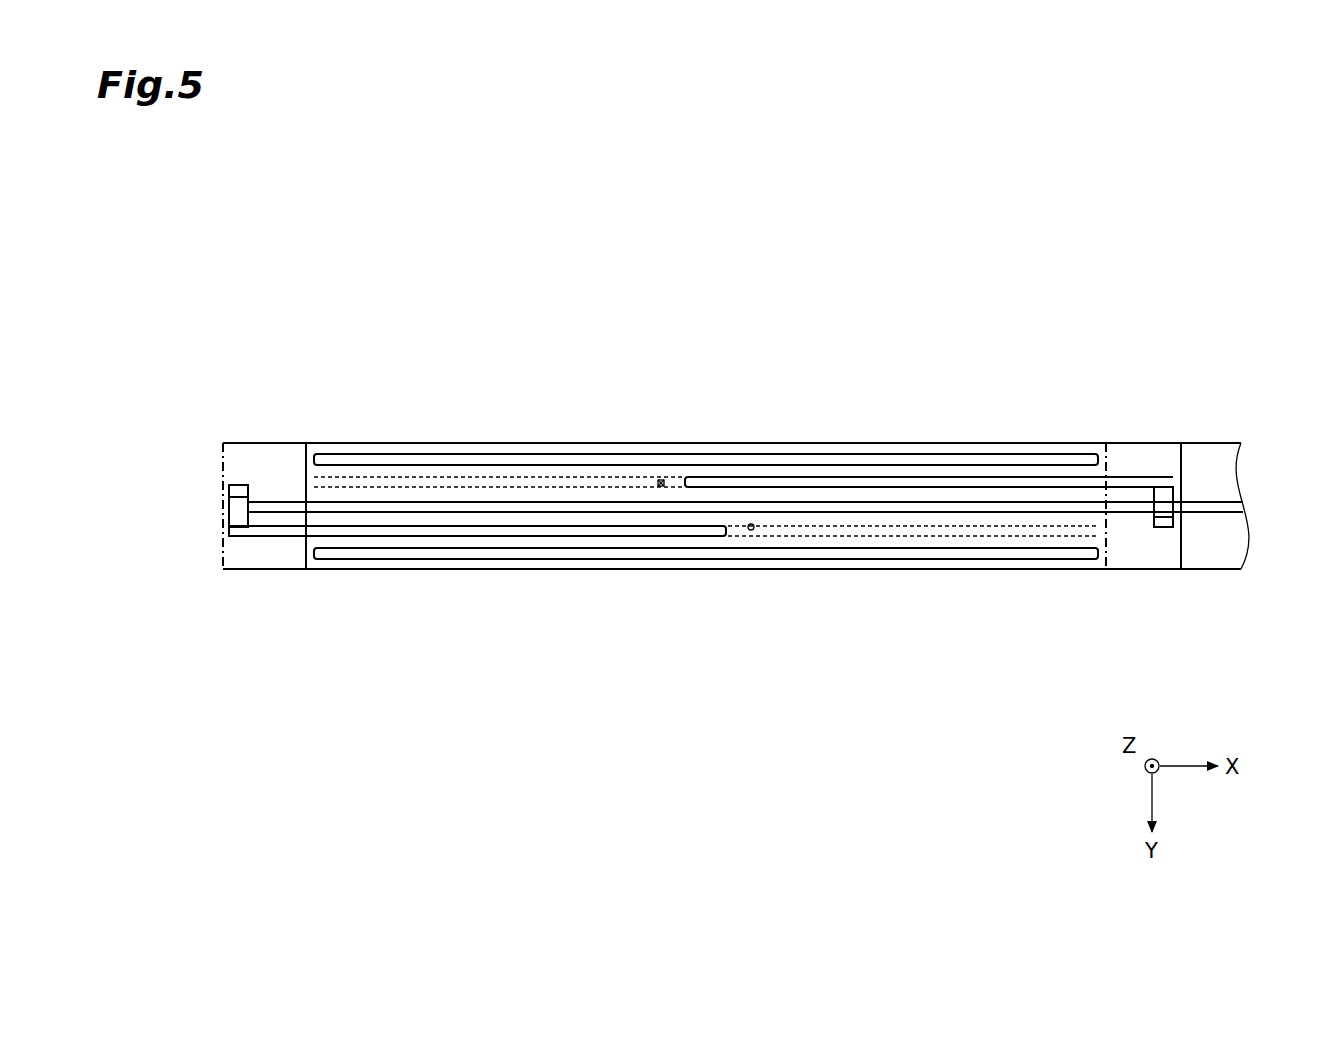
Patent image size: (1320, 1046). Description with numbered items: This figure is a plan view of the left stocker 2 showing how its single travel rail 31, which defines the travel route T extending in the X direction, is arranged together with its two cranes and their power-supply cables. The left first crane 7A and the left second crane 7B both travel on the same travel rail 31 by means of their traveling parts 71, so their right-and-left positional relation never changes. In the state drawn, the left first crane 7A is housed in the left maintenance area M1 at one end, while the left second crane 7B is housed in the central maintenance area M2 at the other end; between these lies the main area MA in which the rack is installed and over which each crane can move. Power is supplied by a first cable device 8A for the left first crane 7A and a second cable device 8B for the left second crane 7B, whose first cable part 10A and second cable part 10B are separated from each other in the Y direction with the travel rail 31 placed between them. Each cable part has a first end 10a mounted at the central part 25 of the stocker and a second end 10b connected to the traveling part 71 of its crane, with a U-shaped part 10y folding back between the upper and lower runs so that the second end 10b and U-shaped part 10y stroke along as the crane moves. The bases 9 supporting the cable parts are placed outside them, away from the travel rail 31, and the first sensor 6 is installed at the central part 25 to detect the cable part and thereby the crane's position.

The left stocker 2 is at (456, 412).
The main area MA is at (511, 443).
The first sensor 6 is at (659, 480).
The left first stacker crane 7A is at (237, 474).
The left second stacker crane 7B is at (1157, 537).
The first cable device 8A is at (412, 547).
The second cable device 8B is at (997, 465).
The base 9 is at (795, 463).
The first cable part 10A is at (517, 539).
The second cable part 10B is at (380, 472).
The first end 10a is at (732, 477).
The second end 10b is at (1163, 482).
The U-shaped part 10y is at (684, 480).
The central part 25 is at (769, 519).
The travel rail 31 is at (896, 504).
The traveling part 71 is at (237, 510).
The left maintenance area M1 is at (284, 552).
The central maintenance area M2 is at (1125, 470).
The travel route T is at (952, 524).